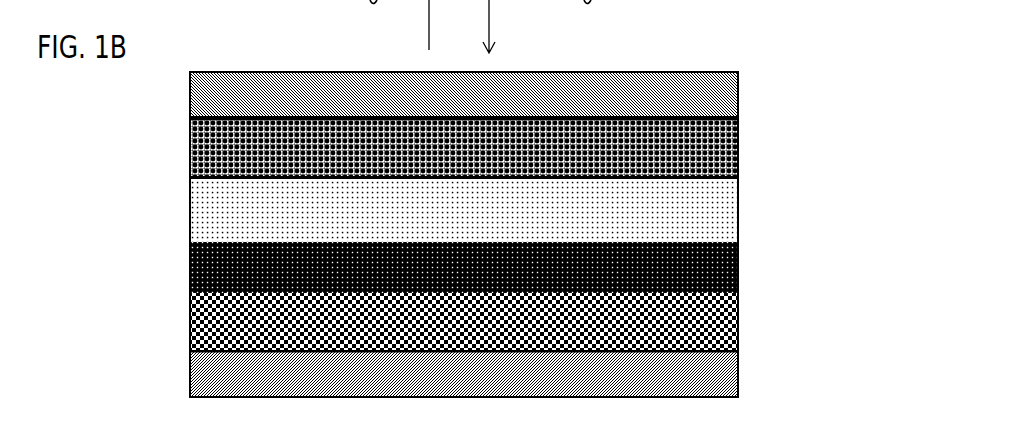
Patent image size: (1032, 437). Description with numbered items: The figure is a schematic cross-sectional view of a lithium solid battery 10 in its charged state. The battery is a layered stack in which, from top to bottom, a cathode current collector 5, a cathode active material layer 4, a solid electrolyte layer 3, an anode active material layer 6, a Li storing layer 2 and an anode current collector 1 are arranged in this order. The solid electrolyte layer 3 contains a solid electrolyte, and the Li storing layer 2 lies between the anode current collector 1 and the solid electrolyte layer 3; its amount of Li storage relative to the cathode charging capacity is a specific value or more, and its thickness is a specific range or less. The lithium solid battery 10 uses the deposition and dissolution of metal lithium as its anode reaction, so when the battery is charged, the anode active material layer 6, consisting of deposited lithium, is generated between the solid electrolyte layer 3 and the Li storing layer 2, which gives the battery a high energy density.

The lithium solid battery 10 is at (683, 53).
The cathode current collector 5 is at (713, 98).
The cathode active material layer 4 is at (738, 147).
The solid electrolyte layer 3 is at (718, 220).
The anode active material layer 6 is at (738, 258).
The Li storing layer 2 is at (718, 330).
The anode current collector 1 is at (715, 377).